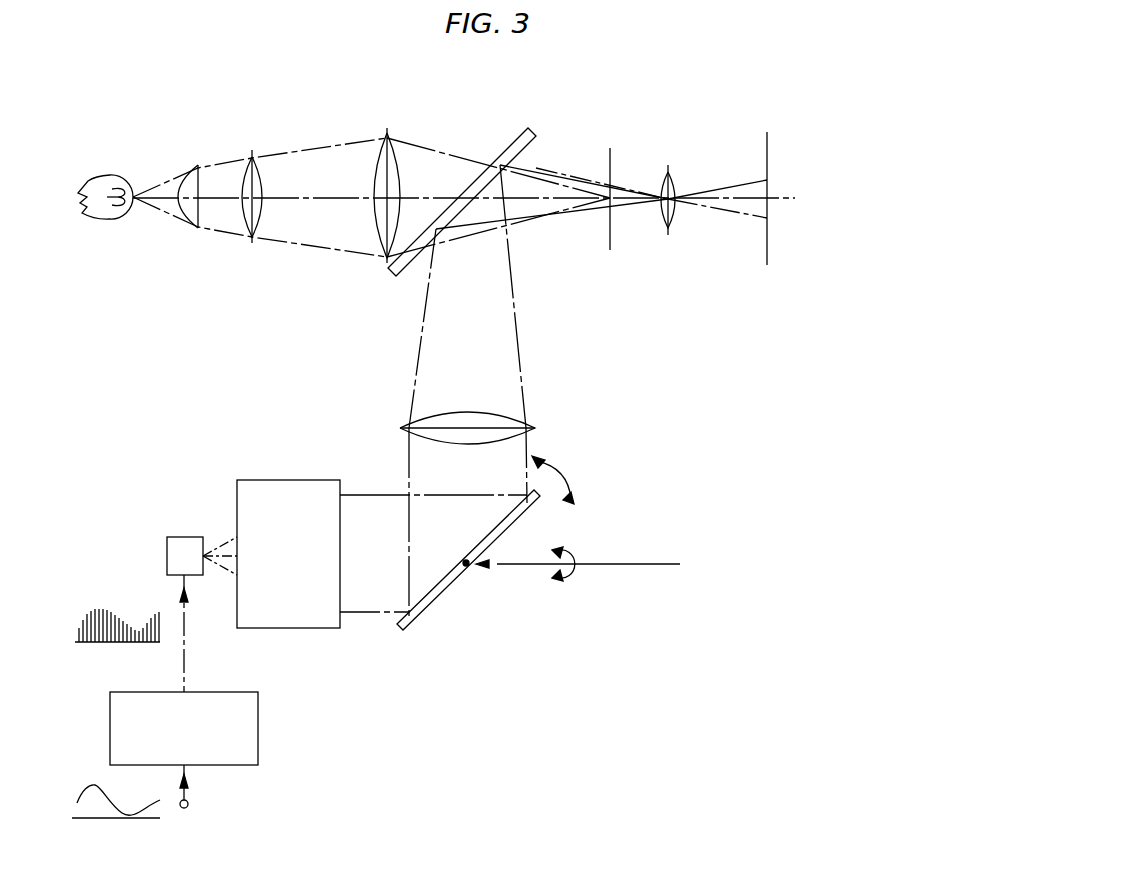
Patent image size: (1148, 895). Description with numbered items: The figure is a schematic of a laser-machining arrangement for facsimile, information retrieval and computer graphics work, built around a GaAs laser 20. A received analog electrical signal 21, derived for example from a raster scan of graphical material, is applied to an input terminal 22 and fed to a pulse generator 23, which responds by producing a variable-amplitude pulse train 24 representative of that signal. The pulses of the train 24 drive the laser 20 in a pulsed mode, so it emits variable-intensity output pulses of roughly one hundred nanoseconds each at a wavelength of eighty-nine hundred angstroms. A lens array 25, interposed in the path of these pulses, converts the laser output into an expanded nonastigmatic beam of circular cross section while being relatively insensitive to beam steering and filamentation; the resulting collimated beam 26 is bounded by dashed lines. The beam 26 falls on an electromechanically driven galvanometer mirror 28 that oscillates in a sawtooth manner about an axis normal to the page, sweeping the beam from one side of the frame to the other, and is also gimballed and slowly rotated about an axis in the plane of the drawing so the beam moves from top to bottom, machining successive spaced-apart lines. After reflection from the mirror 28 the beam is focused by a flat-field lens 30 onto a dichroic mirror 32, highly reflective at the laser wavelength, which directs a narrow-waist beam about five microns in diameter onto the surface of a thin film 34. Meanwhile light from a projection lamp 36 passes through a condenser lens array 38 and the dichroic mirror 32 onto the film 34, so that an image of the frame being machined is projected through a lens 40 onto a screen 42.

The GaAs laser 20 is at (184, 544).
The analog electrical signal 21 is at (87, 785).
The input terminal 22 is at (188, 804).
The pulse generator 23 is at (258, 716).
The variable-amplitude pulse train 24 is at (129, 622).
The lens array 25 is at (298, 480).
The collimated beam 26 is at (375, 497).
The galvanometer mirror 28 is at (450, 583).
The flat-field lens 30 is at (528, 424).
The dichroic mirror 32 is at (518, 136).
The thin film 34 is at (609, 160).
The projection lamp 36 is at (96, 183).
The condenser lens array 38 is at (380, 125).
The projection lens 40 is at (662, 236).
The screen 42 is at (770, 137).